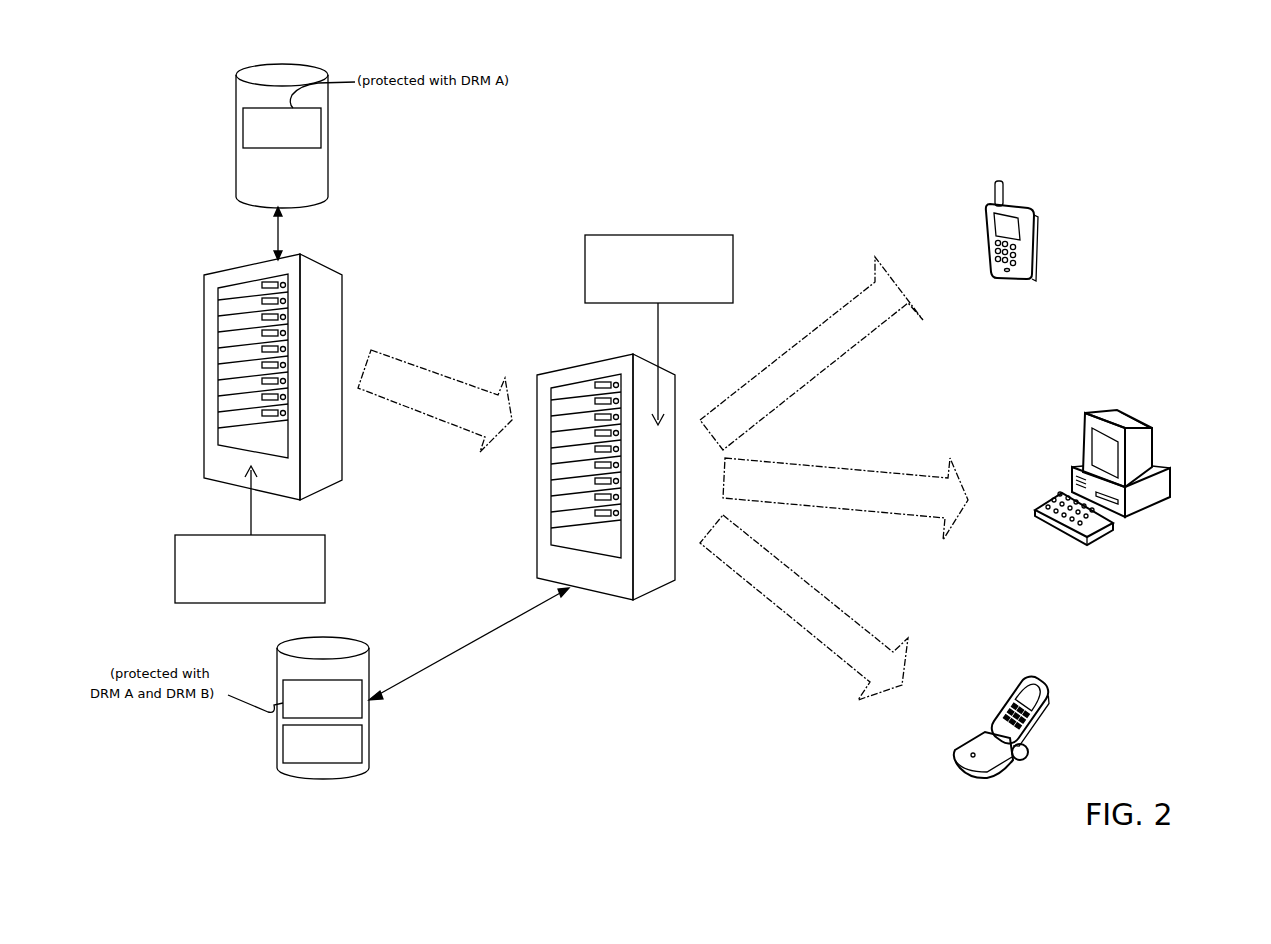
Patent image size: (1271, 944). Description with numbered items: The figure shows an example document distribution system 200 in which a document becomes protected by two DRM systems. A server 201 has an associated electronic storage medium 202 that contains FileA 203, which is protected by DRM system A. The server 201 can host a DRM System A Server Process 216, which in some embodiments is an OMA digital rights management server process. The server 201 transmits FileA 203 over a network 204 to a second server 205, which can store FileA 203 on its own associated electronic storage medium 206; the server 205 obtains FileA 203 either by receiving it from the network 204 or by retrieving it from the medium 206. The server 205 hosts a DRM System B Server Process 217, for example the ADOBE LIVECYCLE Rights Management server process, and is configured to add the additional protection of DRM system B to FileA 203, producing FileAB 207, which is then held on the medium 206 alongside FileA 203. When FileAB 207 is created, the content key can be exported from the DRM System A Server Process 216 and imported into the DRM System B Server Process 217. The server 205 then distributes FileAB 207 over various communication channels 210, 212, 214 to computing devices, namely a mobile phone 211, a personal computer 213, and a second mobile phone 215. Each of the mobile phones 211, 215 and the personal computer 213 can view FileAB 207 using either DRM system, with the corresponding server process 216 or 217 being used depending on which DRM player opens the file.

The document distribution system 200 is at (1193, 68).
The server 201 is at (204, 447).
The electronic storage medium 202 is at (236, 190).
The FileA 203 is at (243, 123).
The network 204 is at (437, 415).
The server 205 is at (613, 602).
The electronic storage medium 206 is at (315, 777).
The FileAB 207 is at (292, 710).
The communication channel 210 is at (800, 342).
The mobile phone 211 is at (1017, 283).
The communication channel 212 is at (880, 510).
The personal computer 213 is at (1077, 542).
The communication channel 214 is at (825, 652).
The mobile phone 215 is at (950, 762).
The DRM System A Server Process 216 is at (175, 570).
The DRM System B Server Process 217 is at (585, 270).